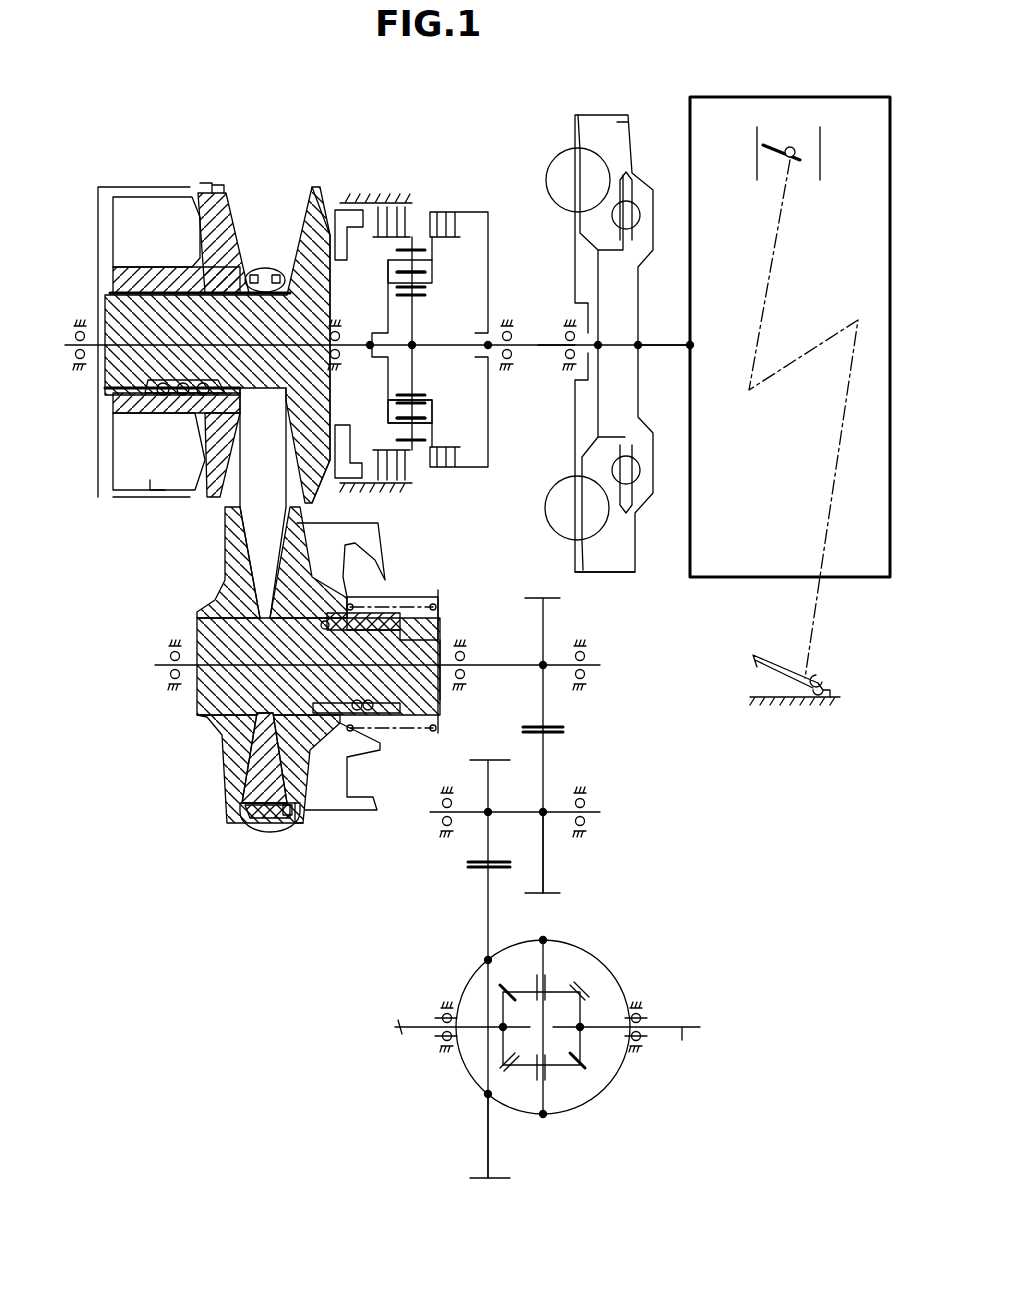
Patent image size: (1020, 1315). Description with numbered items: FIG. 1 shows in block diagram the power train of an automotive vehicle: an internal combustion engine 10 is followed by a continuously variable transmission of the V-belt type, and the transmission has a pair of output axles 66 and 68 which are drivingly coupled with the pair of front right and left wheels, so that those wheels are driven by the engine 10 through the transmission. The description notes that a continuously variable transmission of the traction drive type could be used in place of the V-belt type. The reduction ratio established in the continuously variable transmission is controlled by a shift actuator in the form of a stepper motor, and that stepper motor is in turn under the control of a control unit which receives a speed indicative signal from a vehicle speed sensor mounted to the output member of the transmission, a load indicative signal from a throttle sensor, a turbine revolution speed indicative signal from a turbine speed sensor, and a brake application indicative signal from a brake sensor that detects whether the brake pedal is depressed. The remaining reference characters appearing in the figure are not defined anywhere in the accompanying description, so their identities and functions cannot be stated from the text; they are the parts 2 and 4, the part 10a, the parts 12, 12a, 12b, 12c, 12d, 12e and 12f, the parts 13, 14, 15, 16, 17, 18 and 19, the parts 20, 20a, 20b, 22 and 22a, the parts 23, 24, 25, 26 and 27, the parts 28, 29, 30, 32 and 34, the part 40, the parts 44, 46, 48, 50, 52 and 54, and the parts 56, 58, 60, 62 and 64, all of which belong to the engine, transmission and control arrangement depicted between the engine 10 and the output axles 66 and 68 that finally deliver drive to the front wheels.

The accelerator pedal 2 is at (810, 675).
The shift lever 4 is at (795, 130).
The internal combustion engine 10 is at (760, 96).
The output shaft of control unit 10a is at (662, 348).
The electric motor 12 is at (605, 98).
The motor brush 12a is at (645, 470).
The motor rotor 12b is at (555, 500).
The motor winding 12c is at (575, 495).
The motor brush 12d is at (628, 170).
The motor housing 12e is at (630, 125).
The motor end plate 12f is at (628, 575).
The motor shaft 13 is at (538, 348).
The input shaft 14 is at (340, 348).
The planetary gear unit 15 is at (380, 175).
The drive pulley 16 is at (314, 168).
The planet carrier 17 is at (458, 284).
The fixed pulley half 18 is at (322, 195).
The planet gear shaft 19 is at (420, 360).
The hydraulic cylinder 20 is at (130, 200).
The cylinder housing 20a is at (100, 498).
The cylinder wall 20b is at (197, 190).
The movable pulley half 22 is at (228, 185).
The bearing 22a is at (230, 205).
The sun gear 23 is at (428, 425).
The ball bearing 24 is at (225, 505).
The ring gear carrier 25 is at (385, 385).
The driven pulley 26 is at (251, 850).
The brake 27 is at (418, 455).
The output shaft 28 is at (508, 667).
The driven pulley hub 29 is at (190, 607).
The fixed pulley half 30 is at (235, 765).
The movable pulley half 32 is at (332, 800).
The spring seat 34 is at (300, 822).
The ring gear 40 is at (475, 206).
The axle shaft 44 is at (505, 1180).
The intermediate shaft 46 is at (530, 597).
The gear 48 is at (548, 870).
The clutch 50 is at (425, 205).
The gear 52 is at (555, 810).
The counter shaft 54 is at (465, 858).
The differential 56 is at (626, 952).
The side gear 58 is at (565, 1065).
The pinion gear 60 is at (520, 985).
The side gear 62 is at (500, 1062).
The pinion gear 64 is at (590, 1000).
The output axle 66 is at (403, 1032).
The output axle 68 is at (682, 1035).